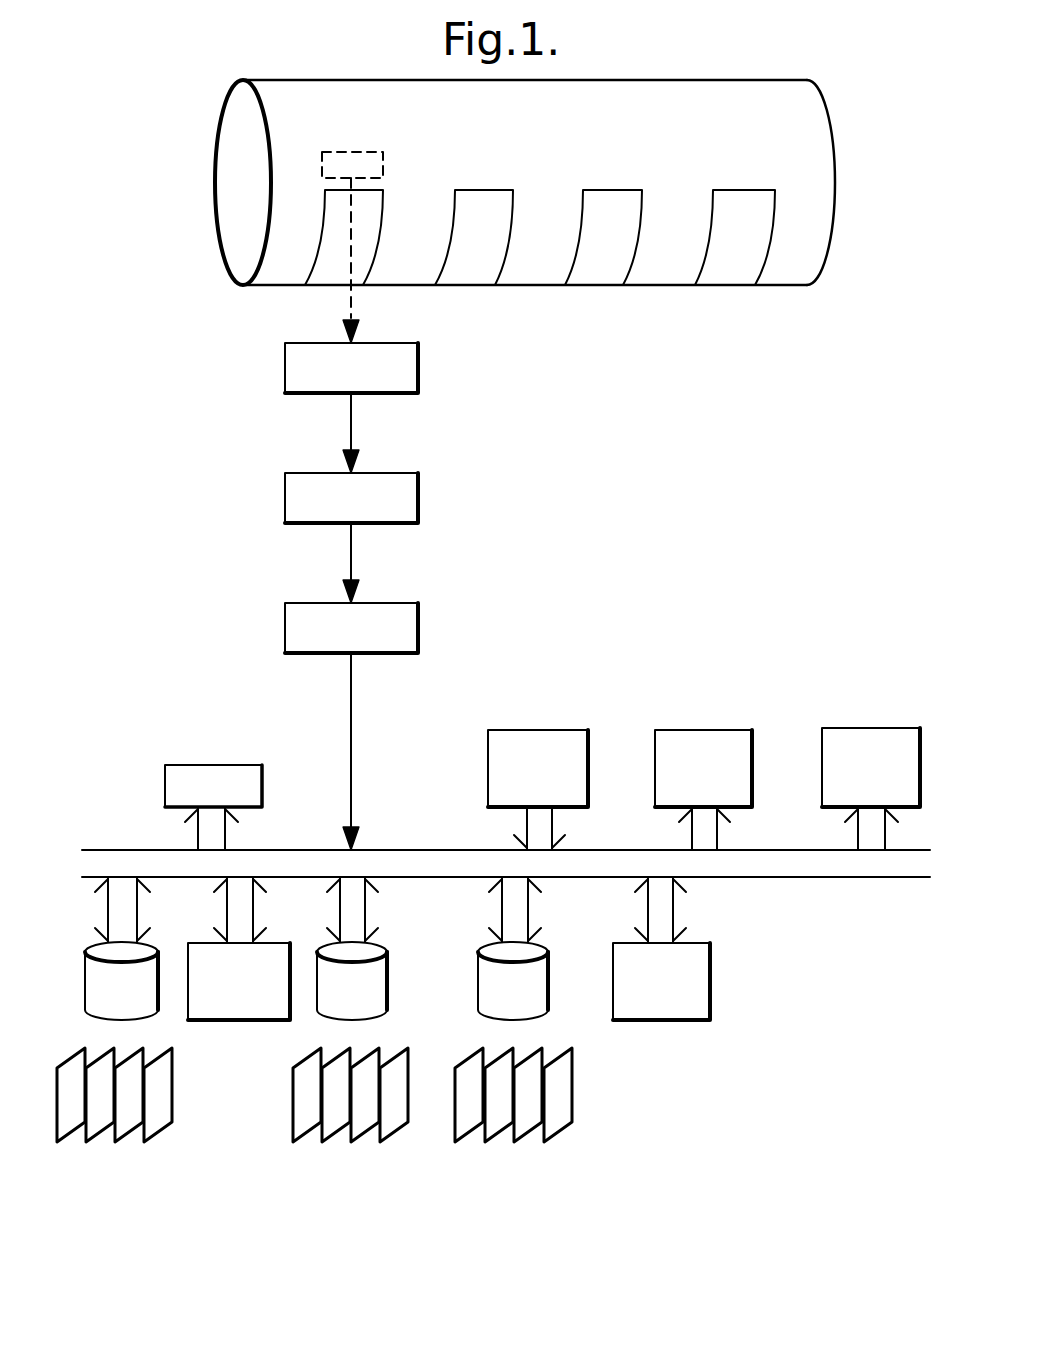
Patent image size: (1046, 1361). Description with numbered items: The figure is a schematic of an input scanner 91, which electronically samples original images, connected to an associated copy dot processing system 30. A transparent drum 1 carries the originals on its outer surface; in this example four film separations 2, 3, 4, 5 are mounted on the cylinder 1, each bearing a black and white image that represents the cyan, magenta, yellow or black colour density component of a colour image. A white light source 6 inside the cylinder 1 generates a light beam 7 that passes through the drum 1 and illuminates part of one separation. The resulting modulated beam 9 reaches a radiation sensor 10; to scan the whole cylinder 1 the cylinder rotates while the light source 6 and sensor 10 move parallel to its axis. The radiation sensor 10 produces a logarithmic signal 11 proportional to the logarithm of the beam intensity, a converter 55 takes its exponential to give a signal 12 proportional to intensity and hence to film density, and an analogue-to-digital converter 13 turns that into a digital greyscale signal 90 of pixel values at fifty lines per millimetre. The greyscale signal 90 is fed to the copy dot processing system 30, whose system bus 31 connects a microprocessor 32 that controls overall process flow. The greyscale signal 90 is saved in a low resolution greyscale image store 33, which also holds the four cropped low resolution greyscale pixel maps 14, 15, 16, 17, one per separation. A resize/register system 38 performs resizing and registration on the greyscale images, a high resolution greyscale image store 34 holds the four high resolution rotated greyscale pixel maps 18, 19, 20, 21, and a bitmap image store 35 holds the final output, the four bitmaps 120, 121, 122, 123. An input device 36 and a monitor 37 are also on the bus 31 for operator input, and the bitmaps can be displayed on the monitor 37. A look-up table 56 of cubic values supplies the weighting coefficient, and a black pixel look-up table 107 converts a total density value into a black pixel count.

The transparent drum 1 is at (310, 80).
The film separation 2 is at (326, 226).
The film separation 3 is at (490, 190).
The film separation 4 is at (620, 190).
The film separation 5 is at (750, 190).
The white light source 6 is at (355, 152).
The light beam 7 is at (353, 228).
The modulated beam 9 is at (350, 293).
The radiation sensor 10 is at (418, 373).
The logarithmic signal 11 is at (350, 443).
The signal 12 is at (350, 575).
The analogue-to-digital converter 13 is at (418, 637).
The low resolution greyscale pixel map 14 is at (77, 1056).
The low resolution greyscale pixel map 15 is at (100, 1142).
The low resolution greyscale pixel map 16 is at (118, 1142).
The low resolution greyscale pixel map 17 is at (202, 1100).
The high resolution rotated greyscale pixel map 18 is at (292, 1108).
The high resolution rotated greyscale pixel map 19 is at (335, 1142).
The high resolution rotated greyscale pixel map 20 is at (355, 1142).
The high resolution rotated greyscale pixel map 21 is at (408, 1070).
The copy dot processing system 30 is at (788, 659).
The system bus 31 is at (145, 850).
The microprocessor 32 is at (222, 1021).
The low resolution greyscale image store 33 is at (85, 972).
The high resolution greyscale image store 34 is at (388, 977).
The bitmap image store 35 is at (548, 977).
The input device 36 is at (520, 730).
The monitor 37 is at (700, 730).
The resize/register system 38 is at (710, 980).
The converter 55 is at (418, 505).
The look-up table 56 is at (222, 765).
The digital greyscale signal 90 is at (350, 737).
The input scanner 91 is at (564, 348).
The black pixel look-up table 107 is at (873, 728).
The bitmap 120 is at (455, 1135).
The bitmap 121 is at (503, 1135).
The bitmap 122 is at (528, 1133).
The bitmap 123 is at (573, 1090).